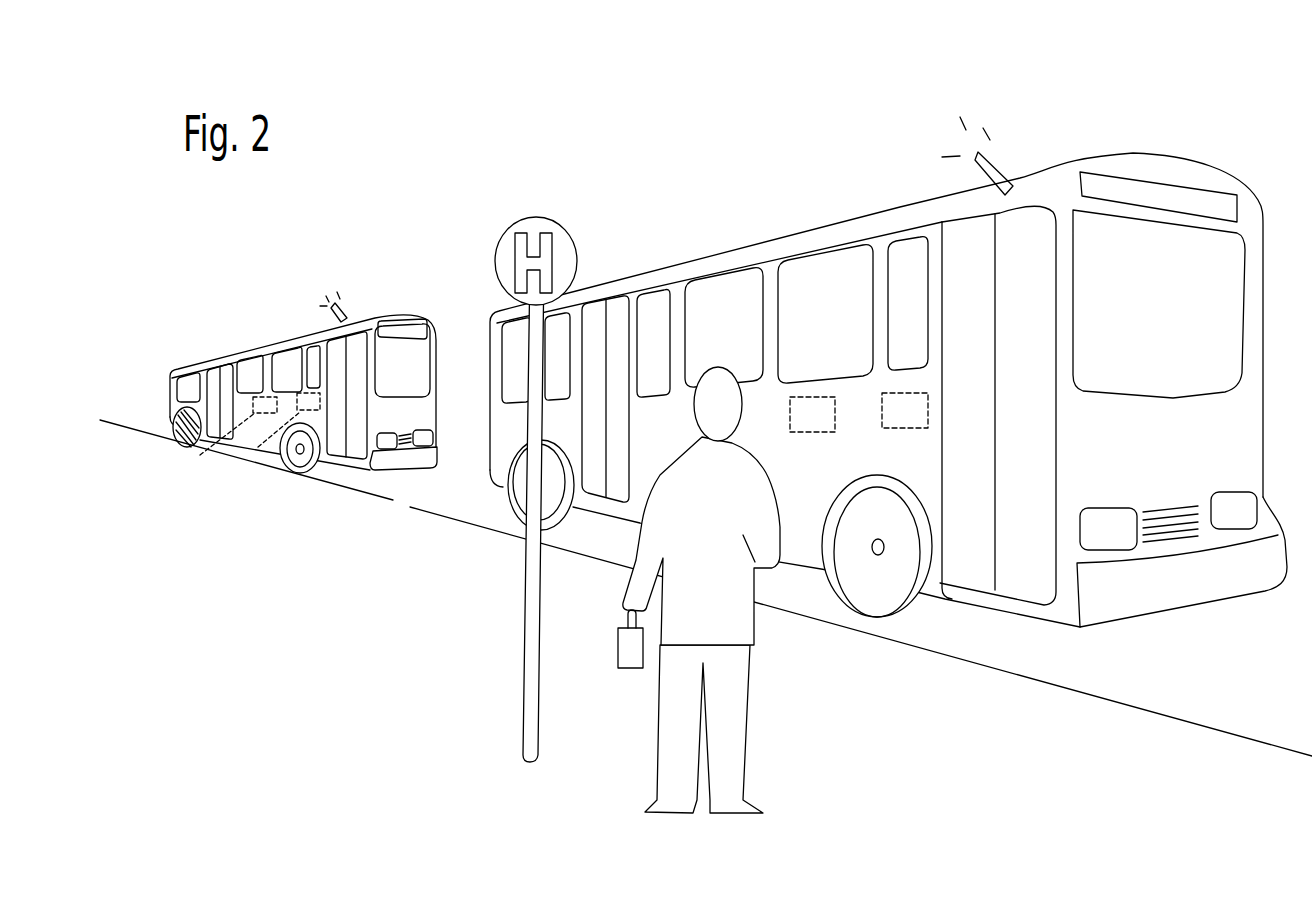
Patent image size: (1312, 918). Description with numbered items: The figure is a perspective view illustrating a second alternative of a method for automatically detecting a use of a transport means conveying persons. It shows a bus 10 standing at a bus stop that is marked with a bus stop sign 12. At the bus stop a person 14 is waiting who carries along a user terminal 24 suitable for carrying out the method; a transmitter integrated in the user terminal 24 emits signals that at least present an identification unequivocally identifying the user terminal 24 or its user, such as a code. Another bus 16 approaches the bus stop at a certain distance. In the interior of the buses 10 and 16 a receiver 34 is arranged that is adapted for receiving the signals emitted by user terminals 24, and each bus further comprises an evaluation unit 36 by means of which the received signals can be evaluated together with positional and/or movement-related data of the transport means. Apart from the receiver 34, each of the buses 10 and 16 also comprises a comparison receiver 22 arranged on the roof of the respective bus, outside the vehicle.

The bus 10 is at (1177, 137).
The bus stop sign 12 is at (563, 210).
The person 14 is at (765, 713).
The bus 16 is at (398, 312).
The comparison receiver 22 is at (1012, 130).
The user terminal 24 is at (613, 652).
The receiver 34 is at (913, 431).
The evaluation unit 36 is at (830, 433).